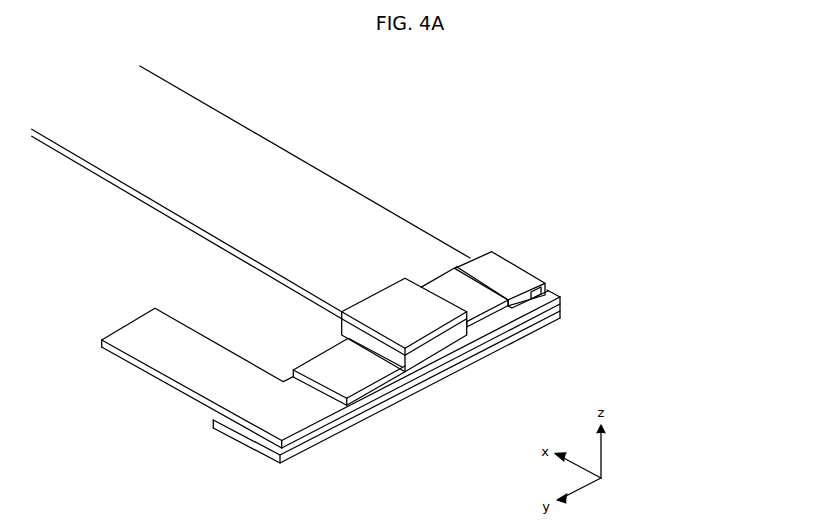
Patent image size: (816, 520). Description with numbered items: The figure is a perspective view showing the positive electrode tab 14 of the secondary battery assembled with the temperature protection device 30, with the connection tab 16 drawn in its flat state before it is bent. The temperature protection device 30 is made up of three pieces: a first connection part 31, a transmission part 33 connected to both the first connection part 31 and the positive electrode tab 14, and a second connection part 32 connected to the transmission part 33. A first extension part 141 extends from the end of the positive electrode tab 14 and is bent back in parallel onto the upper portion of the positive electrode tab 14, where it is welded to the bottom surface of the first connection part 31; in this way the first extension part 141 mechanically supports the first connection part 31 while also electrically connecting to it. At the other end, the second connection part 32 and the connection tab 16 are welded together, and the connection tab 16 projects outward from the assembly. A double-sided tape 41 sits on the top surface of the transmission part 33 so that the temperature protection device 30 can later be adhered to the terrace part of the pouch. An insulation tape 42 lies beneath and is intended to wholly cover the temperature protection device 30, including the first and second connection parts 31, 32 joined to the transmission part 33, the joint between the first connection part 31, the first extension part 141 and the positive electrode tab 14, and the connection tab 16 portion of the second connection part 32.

The positive electrode tab 14 is at (372, 216).
The connection tab 16 is at (177, 370).
The temperature protection device 30 is at (428, 441).
The first connection part 31 is at (478, 307).
The second connection part 32 is at (361, 378).
The transmission part 33 is at (443, 347).
The double-sided tape 41 is at (398, 290).
The insulation tape 42 is at (243, 432).
The first extension part 141 is at (512, 272).